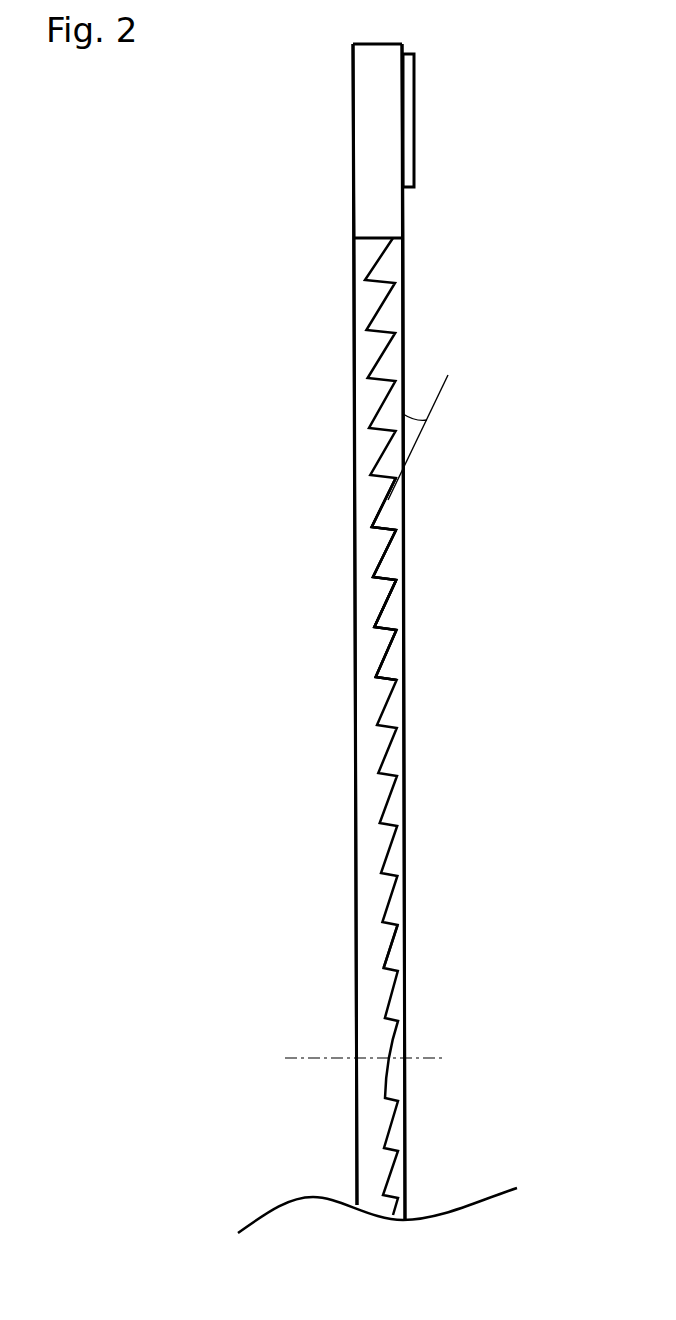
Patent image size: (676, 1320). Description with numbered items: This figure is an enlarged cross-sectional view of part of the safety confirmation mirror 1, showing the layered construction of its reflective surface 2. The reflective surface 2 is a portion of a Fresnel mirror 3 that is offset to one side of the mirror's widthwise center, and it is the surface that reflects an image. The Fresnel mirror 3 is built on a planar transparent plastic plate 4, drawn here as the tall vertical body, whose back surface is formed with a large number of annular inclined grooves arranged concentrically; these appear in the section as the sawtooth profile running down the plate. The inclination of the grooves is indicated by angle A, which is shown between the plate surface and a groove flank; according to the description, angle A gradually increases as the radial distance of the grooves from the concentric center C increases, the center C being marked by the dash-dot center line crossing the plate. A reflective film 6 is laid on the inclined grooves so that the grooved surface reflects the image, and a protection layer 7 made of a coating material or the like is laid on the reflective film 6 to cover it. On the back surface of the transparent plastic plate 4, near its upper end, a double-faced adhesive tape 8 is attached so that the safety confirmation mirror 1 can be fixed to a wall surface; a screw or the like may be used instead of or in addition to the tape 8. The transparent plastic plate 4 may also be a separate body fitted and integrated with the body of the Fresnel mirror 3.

The safety confirmation mirror 1 is at (273, 130).
The reflective surface 2 is at (300, 510).
The Fresnel mirror 3 is at (308, 463).
The transparent plastic plate 4 is at (370, 217).
The reflective film 6 is at (390, 945).
The protection layer 7 is at (397, 612).
The double-faced adhesive tape 8 is at (408, 125).
The angle of inclination A is at (418, 437).
The concentric center C is at (354, 1059).